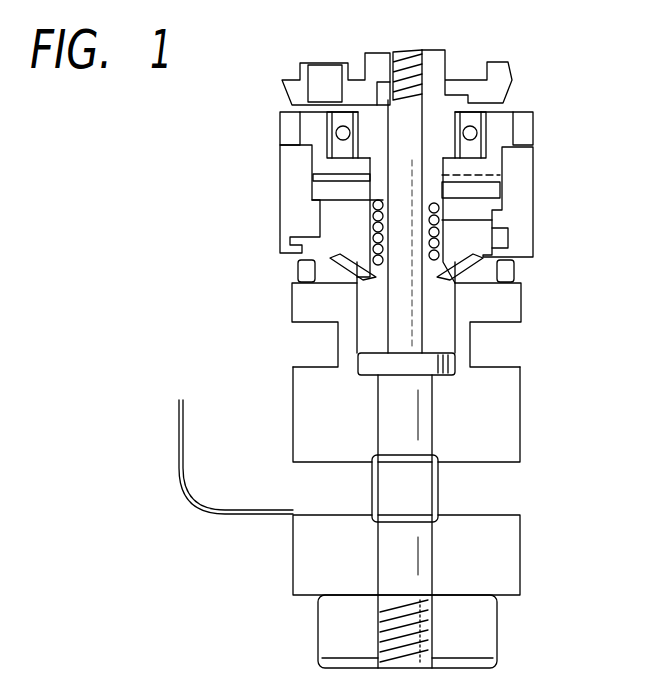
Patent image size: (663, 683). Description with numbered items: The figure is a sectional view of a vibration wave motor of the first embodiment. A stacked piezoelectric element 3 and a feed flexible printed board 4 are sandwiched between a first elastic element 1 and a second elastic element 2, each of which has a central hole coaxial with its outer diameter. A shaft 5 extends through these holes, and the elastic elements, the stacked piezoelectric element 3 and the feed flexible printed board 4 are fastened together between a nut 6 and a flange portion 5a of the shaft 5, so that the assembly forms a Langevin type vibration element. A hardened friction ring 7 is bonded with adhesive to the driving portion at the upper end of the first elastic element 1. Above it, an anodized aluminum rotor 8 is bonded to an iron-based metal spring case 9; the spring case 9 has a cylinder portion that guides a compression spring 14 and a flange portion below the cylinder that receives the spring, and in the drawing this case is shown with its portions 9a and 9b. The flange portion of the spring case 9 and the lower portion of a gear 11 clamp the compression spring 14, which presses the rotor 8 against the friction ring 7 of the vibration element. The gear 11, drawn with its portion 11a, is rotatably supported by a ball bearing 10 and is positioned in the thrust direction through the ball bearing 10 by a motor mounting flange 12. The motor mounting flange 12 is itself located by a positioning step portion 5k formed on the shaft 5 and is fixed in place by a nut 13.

The first elastic element 1 is at (515, 430).
The second elastic element 2 is at (515, 553).
The stacked piezoelectric element 3 is at (515, 495).
The feed flexible printed board 4 is at (236, 515).
The shaft 5 is at (423, 407).
The flange portion 5a is at (368, 363).
The positioning step portion 5k is at (392, 158).
The nut 6 is at (490, 630).
The friction ring 7 is at (512, 265).
The rotor 8 is at (523, 177).
The spring case 9 is at (508, 229).
The bracket plate 9a is at (497, 210).
The bracket arm 9b is at (483, 252).
The ball bearing 10 is at (335, 128).
The gear 11 is at (515, 128).
The bearing flange 11a is at (370, 195).
The motor mounting flange 12 is at (507, 63).
The nut 13 is at (440, 44).
The compression spring 14 is at (310, 233).